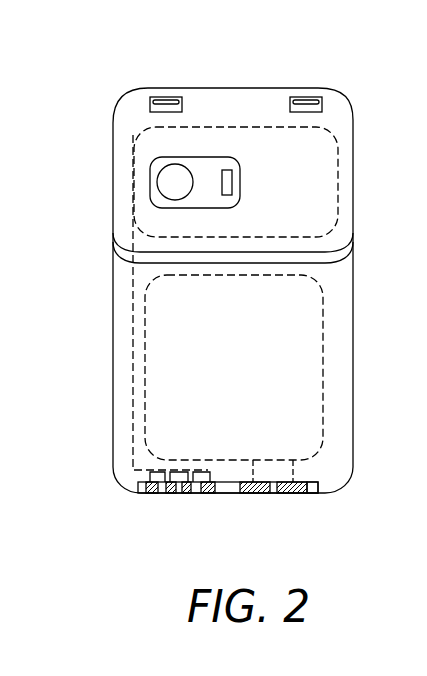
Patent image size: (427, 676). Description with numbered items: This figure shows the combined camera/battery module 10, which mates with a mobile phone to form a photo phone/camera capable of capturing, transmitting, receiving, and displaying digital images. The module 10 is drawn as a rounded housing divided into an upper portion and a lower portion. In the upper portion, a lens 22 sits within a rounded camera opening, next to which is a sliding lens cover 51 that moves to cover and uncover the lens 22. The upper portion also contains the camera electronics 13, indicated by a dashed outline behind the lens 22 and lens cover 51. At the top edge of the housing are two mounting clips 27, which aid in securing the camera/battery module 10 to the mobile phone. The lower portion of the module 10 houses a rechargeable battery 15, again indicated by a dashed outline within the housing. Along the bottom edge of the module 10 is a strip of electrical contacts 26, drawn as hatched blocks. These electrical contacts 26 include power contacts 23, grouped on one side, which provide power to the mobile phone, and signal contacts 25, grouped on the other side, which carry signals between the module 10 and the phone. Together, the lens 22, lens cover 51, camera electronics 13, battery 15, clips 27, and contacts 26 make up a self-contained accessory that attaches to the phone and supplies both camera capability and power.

The camera/battery module 10 is at (113, 413).
The camera electronics 13 is at (315, 152).
The rechargeable battery 15 is at (313, 392).
The lens 22 is at (168, 180).
The power contacts 23 is at (240, 497).
The signal contacts 25 is at (145, 497).
The electrical contacts 26 is at (318, 487).
The mounting clip 27 is at (297, 96).
The sliding lens cover 51 is at (240, 177).